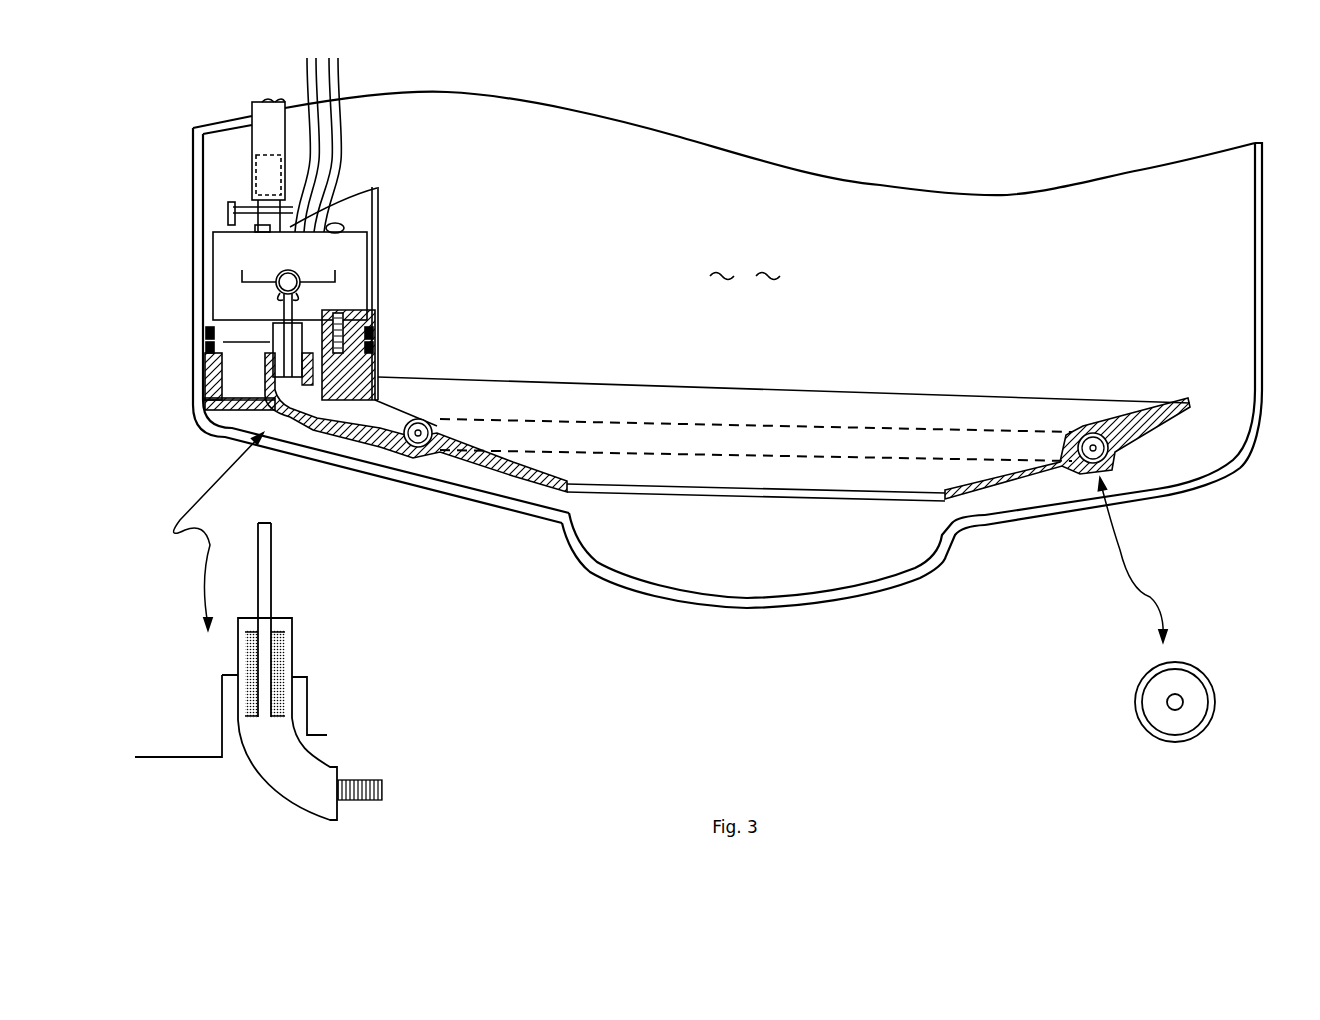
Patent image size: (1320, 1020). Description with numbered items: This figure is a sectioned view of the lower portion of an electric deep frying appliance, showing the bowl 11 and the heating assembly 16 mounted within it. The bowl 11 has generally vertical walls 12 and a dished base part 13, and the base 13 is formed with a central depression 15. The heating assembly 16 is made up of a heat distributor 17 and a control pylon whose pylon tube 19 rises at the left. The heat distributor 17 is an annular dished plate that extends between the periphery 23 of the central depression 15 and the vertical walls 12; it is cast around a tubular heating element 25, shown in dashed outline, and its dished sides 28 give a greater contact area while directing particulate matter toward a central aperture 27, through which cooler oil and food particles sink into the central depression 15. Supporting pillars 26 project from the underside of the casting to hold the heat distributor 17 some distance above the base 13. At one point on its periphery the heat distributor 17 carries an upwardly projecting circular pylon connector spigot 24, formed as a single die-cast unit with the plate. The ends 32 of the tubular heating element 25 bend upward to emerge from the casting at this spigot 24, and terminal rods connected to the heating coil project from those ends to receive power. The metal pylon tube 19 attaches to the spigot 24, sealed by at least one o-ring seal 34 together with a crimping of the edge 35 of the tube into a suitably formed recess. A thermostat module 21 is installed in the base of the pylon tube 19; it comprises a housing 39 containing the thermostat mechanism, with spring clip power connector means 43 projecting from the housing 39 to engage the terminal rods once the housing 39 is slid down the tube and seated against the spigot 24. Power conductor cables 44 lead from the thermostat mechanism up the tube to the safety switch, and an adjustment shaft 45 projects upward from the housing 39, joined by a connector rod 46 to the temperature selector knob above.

The bowl 11 is at (745, 275).
The vertical walls 12 is at (1255, 290).
The dished base part 13 is at (1162, 497).
The central depression 15 is at (730, 587).
The heating assembly 16 is at (600, 237).
The heat distributor 17 is at (858, 377).
The pylon tube 19 is at (379, 218).
The thermostat module 21 is at (175, 281).
The periphery 23 is at (943, 533).
The pylon connector spigot 24 is at (352, 367).
The tubular heating element 25 is at (663, 422).
The supporting pillars 26 is at (503, 493).
The central aperture 27 is at (703, 503).
The sides 28 is at (517, 453).
The ends 32 is at (372, 660).
The o ring seal 34 is at (375, 330).
The edge 35 is at (183, 376).
The housing 39 is at (357, 283).
The spring clip power connector means 43 is at (245, 280).
The power conductor cables 44 is at (338, 72).
The adjustment shaft 45 is at (250, 178).
The connector rod 46 is at (252, 125).